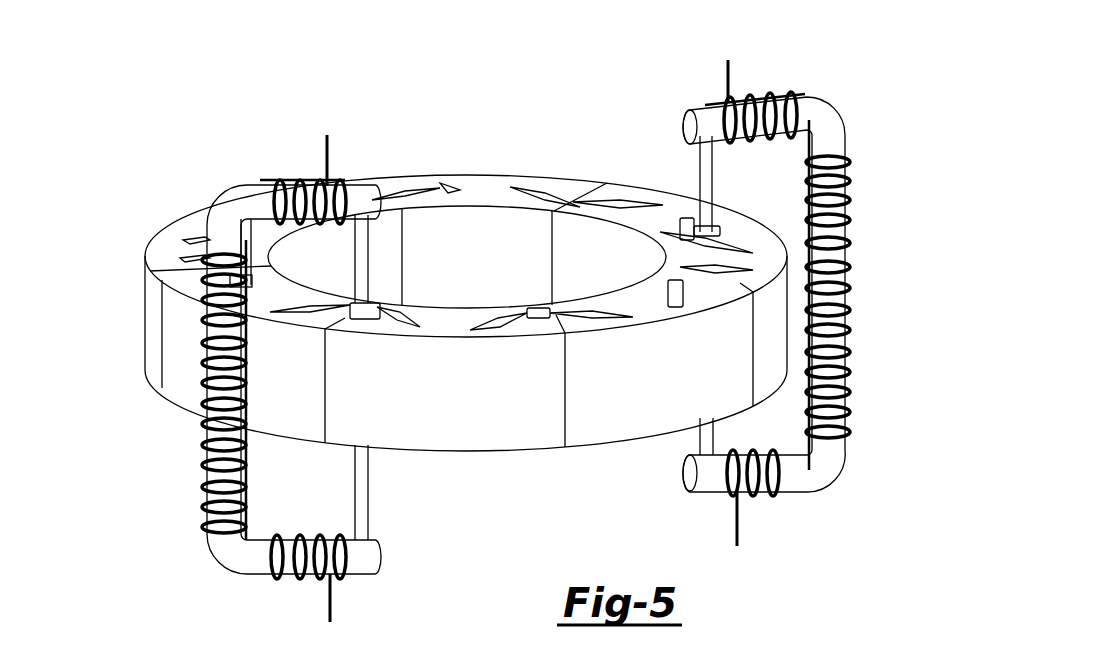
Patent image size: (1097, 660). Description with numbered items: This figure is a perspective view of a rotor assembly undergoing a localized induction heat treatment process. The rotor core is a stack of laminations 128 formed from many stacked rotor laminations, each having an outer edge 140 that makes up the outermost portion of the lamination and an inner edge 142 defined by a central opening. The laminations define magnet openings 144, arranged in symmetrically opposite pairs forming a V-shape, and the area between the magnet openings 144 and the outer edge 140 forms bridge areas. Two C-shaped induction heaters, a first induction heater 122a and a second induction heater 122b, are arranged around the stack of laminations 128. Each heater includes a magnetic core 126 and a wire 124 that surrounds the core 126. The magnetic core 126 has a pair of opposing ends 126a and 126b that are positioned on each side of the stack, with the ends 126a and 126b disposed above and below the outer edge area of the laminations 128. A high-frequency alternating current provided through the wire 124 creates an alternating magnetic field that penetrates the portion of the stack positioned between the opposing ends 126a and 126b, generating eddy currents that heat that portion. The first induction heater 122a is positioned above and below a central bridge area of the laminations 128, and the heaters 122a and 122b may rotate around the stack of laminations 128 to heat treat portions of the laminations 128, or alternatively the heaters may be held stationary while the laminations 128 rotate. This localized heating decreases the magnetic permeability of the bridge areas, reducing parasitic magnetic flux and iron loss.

The first induction heater 122a is at (834, 78).
The second induction heater 122b is at (501, 370).
The wire 124 is at (326, 148).
The magnetic core 126 is at (834, 143).
The first end of magnetic core 126a is at (343, 300).
The second end of magnetic core 126b is at (373, 447).
The stack of laminations 128 is at (150, 245).
The outer edge 140 is at (162, 340).
The inner edge 142 is at (483, 232).
The magnet openings 144 is at (690, 248).